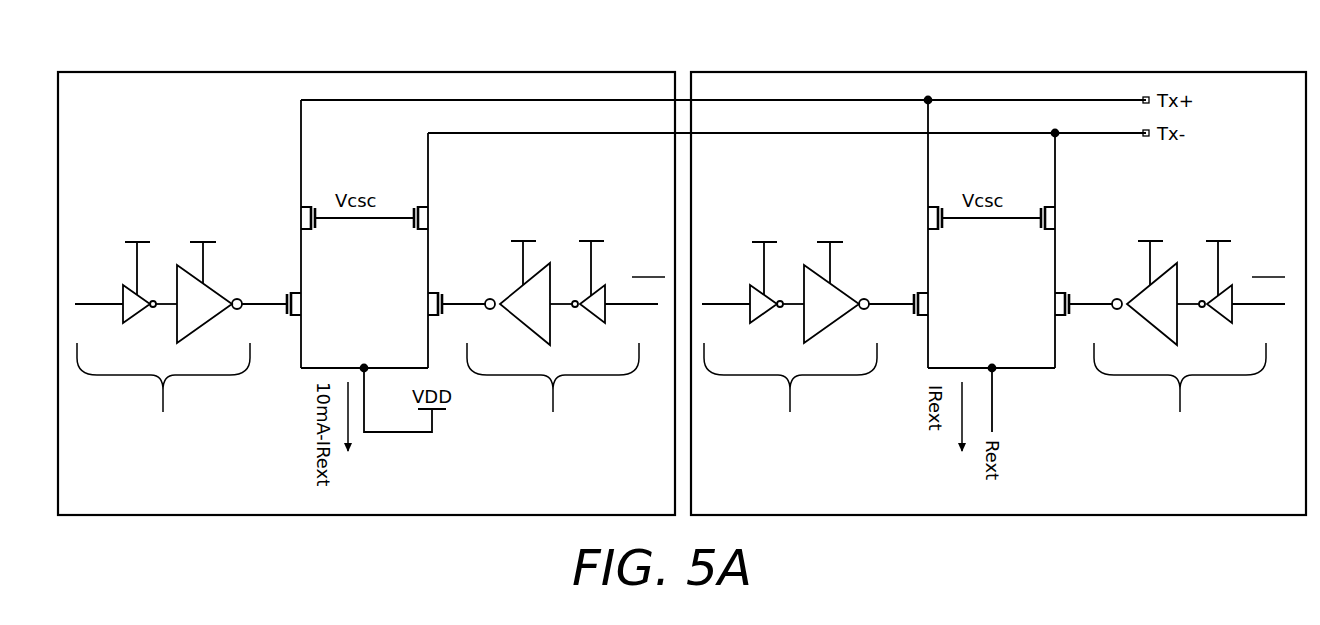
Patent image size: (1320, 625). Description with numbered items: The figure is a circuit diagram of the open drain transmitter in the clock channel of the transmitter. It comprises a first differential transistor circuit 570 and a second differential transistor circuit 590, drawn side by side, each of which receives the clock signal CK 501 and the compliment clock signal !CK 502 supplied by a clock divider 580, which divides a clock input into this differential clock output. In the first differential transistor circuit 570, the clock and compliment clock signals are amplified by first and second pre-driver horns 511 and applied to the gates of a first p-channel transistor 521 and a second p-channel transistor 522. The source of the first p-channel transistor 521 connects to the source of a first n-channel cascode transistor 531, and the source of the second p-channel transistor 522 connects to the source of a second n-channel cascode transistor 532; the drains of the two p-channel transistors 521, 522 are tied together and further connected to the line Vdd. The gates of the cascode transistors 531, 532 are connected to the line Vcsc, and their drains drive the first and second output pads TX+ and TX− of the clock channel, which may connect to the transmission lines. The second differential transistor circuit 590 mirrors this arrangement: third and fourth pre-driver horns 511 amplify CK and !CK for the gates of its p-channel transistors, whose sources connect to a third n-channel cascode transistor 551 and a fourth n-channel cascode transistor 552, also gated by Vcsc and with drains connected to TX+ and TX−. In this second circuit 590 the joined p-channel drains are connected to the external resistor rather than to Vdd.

The clock input CK 501 is at (92, 276).
The inverted clock input CK-bar 502 is at (654, 278).
The pre-driver horn 511 is at (671, 328).
The first p-channel transistor 521 is at (294, 291).
The second p-channel transistor 522 is at (436, 291).
The first n-channel cascode transistor 531 is at (304, 225).
The second n-channel cascode transistor 532 is at (421, 225).
The third n-channel cascode transistor 551 is at (931, 225).
The fourth n-channel cascode transistor 552 is at (1052, 225).
The first differential transistor circuit 570 is at (336, 69).
The second differential transistor circuit 590 is at (980, 69).
The clock divider 580 is at (850, 619).